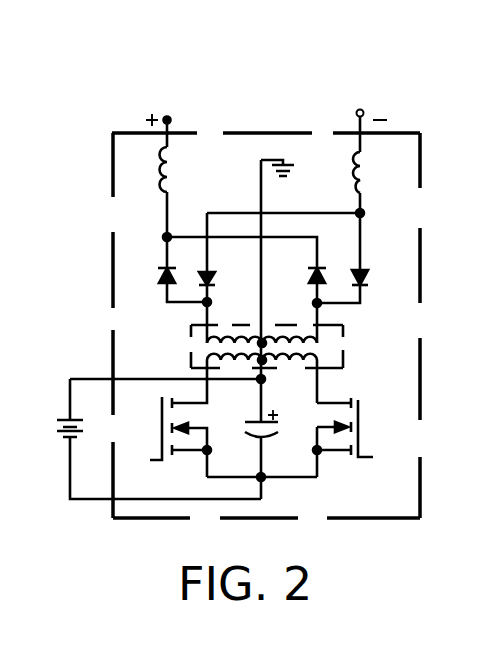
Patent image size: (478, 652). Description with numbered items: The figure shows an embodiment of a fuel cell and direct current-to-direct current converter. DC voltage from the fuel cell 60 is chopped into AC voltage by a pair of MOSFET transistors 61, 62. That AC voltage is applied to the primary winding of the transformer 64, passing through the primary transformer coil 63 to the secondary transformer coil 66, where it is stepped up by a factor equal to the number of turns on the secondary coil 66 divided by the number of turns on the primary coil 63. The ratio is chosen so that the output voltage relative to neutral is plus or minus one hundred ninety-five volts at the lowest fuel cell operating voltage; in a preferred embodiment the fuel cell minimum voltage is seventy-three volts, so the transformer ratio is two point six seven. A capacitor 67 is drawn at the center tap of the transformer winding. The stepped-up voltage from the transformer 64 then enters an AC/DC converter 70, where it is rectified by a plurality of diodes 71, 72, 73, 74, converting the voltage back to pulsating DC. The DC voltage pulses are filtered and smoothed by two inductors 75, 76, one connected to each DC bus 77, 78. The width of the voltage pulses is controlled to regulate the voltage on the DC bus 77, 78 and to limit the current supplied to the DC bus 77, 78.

The fuel cell 60 is at (273, 92).
The MOSFET transistor 61 is at (160, 424).
The MOSFET transistor 62 is at (361, 430).
The primary transformer coil 63 is at (267, 352).
The transformer 64 is at (345, 368).
The secondary transformer coil 66 is at (305, 347).
The capacitor 67 is at (282, 422).
The AC/DC converter 70 is at (422, 173).
The diode 71 is at (158, 278).
The diode 72 is at (216, 278).
The diode 73 is at (310, 278).
The diode 74 is at (368, 278).
The inductor 75 is at (172, 177).
The second inductor 76 is at (352, 178).
The DC bus 77 is at (167, 117).
The DC bus 78 is at (367, 120).